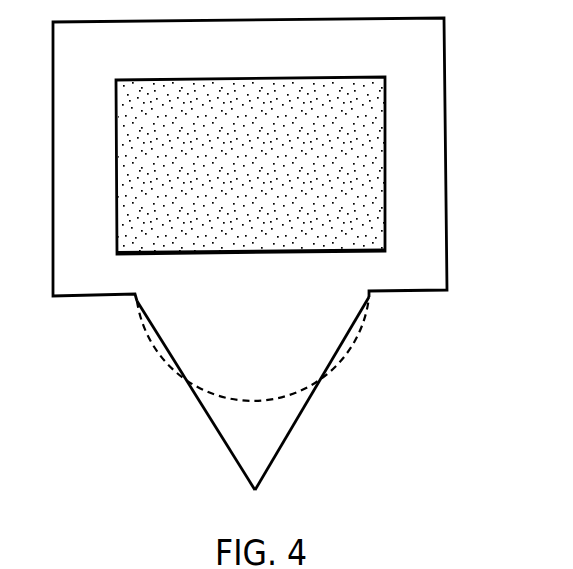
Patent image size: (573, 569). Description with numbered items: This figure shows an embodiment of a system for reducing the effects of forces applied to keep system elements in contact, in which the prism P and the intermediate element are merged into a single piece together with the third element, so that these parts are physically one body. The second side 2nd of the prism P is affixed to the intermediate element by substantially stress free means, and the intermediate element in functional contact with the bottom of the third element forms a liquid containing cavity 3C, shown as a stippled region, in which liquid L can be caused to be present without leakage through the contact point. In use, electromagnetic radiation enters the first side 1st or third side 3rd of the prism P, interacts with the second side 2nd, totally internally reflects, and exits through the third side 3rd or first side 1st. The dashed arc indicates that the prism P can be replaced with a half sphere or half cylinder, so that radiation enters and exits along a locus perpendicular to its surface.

The liquid containing cavity 3C is at (178, 131).
The liquid L is at (254, 178).
The prism P is at (234, 393).
The first side of prism 1st is at (213, 437).
The second side of prism 2nd is at (268, 258).
The third side of prism 3rd is at (295, 428).